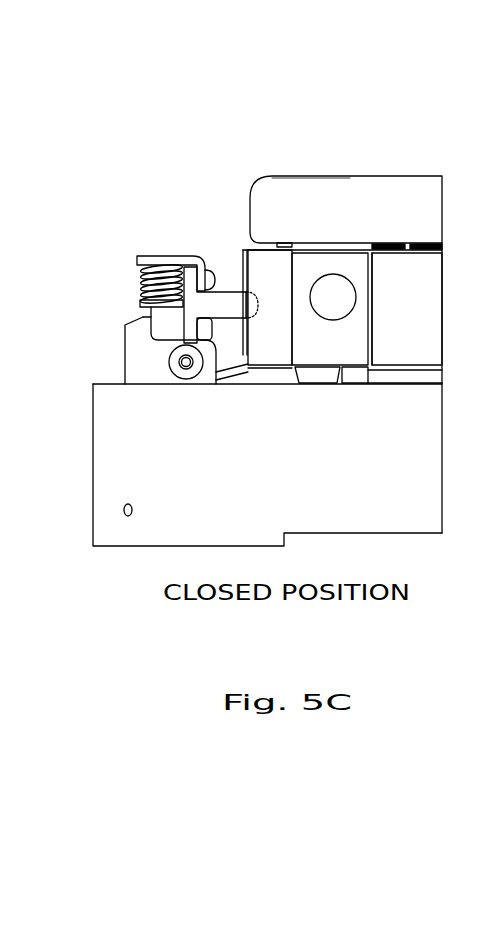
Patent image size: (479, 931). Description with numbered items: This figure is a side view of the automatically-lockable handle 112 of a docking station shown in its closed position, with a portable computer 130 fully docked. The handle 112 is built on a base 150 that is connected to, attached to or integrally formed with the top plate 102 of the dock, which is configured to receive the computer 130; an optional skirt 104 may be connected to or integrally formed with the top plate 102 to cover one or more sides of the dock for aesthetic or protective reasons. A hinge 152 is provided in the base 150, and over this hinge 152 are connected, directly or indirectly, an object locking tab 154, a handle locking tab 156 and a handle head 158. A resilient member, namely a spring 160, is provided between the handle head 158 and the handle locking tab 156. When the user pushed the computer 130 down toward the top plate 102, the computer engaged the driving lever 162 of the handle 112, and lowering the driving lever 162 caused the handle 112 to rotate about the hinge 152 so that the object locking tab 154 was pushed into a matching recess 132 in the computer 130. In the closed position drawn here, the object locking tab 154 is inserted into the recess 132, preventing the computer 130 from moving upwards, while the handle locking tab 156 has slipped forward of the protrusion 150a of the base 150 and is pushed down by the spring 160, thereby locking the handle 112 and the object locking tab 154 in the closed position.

The top plate 102 is at (258, 441).
The skirt 104 is at (412, 459).
The automatically-lockable handle 112 is at (177, 292).
The portable computer 130 is at (311, 148).
The recess 132 is at (270, 300).
The base 150 is at (158, 382).
The protrusion 150a is at (137, 354).
The hinge 152 is at (203, 378).
The object locking tab 154 is at (233, 290).
The handle locking tab 156 is at (141, 304).
The handle head 158 is at (196, 254).
The spring 160 is at (143, 275).
The driving lever 162 is at (247, 375).